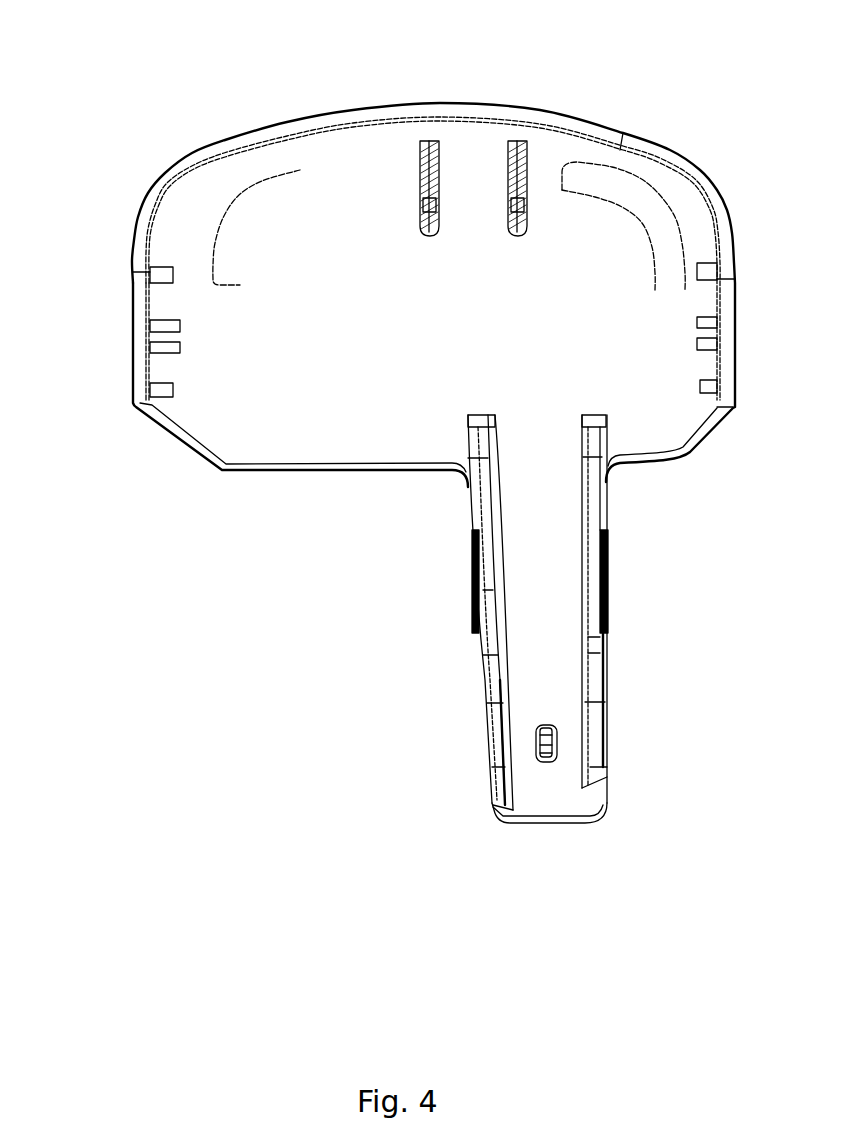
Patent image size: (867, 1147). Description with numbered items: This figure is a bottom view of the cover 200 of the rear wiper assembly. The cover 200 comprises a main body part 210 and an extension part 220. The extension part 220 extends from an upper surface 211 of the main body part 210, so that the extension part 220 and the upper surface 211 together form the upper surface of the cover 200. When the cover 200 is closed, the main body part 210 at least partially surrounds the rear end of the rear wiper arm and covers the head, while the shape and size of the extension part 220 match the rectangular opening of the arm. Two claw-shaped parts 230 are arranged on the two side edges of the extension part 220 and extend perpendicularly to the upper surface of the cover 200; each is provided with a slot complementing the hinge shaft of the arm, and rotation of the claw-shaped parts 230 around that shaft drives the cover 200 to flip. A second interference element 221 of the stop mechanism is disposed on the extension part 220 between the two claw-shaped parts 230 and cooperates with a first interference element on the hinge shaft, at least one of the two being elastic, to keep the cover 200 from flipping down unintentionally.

The cover 200 is at (358, 70).
The main body part 210 is at (207, 143).
The upper surface 211 is at (300, 420).
The extension part 220 is at (557, 808).
The second interference element 221 is at (545, 735).
The claw-shaped parts 230 is at (493, 723).